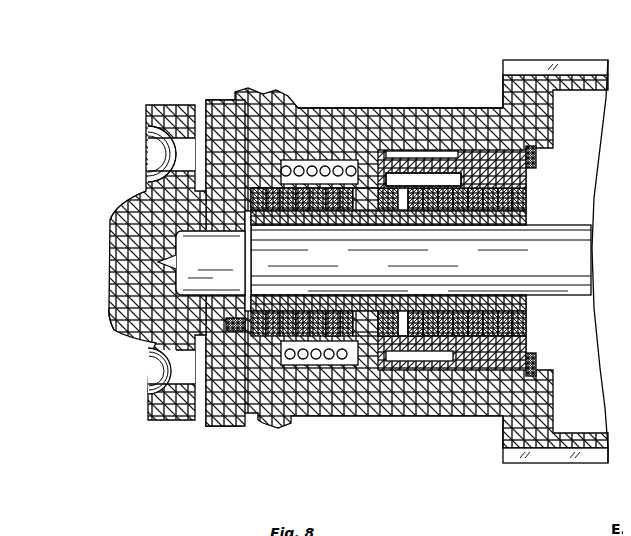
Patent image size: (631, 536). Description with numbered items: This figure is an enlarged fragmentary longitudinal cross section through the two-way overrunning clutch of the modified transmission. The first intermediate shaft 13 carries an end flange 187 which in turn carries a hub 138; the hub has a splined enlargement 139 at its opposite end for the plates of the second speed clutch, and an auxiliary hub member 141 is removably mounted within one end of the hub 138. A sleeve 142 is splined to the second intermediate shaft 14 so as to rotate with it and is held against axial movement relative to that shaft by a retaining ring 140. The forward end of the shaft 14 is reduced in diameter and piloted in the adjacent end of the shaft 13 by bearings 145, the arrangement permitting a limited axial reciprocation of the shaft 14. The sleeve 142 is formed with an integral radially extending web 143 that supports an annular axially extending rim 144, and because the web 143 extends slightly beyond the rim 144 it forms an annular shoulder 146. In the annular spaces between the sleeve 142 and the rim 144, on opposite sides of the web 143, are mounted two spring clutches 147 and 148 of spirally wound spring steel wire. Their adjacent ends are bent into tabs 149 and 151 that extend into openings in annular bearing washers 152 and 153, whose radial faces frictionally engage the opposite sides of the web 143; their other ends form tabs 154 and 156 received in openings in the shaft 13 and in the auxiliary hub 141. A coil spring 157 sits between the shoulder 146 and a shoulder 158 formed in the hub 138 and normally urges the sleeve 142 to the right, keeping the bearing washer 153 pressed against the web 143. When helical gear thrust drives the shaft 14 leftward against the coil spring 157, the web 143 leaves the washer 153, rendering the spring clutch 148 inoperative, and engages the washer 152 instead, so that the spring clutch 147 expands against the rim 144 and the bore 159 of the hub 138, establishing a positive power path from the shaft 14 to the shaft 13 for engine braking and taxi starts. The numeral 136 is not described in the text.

The first intermediate shaft 13 is at (103, 290).
The second intermediate shaft 14 is at (563, 242).
The seal assembly 136 is at (427, 92).
The hub 138 is at (403, 107).
The splined enlargement 139 is at (505, 59).
The retaining ring 140 is at (240, 244).
The auxiliary hub member 141 is at (505, 173).
The sleeve 142 is at (507, 210).
The web 143 is at (363, 347).
The rim 144 is at (420, 167).
The bearings 145 is at (102, 213).
The shoulder 146 is at (347, 160).
The spring clutch 147 is at (290, 157).
The spring clutch 148 is at (480, 167).
The tab 149 is at (323, 357).
The tab 151 is at (402, 347).
The bearing washer 152 is at (340, 347).
The bearing washer 153 is at (382, 345).
The tab 154 is at (152, 333).
The tab 156 is at (510, 315).
The coil spring 157 is at (328, 178).
The shoulder 158 is at (268, 180).
The bore 159 is at (230, 165).
The retainer 187 is at (215, 92).